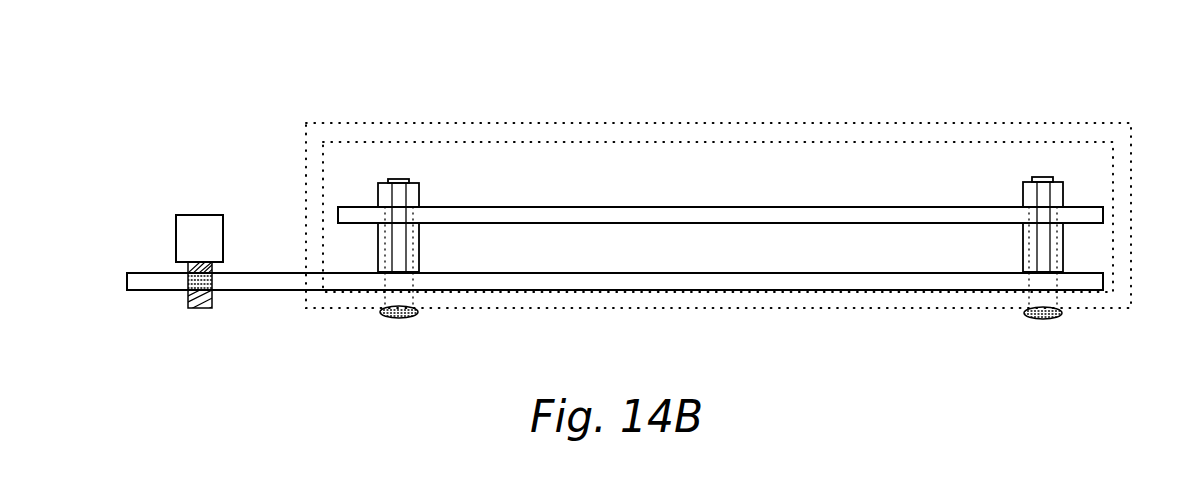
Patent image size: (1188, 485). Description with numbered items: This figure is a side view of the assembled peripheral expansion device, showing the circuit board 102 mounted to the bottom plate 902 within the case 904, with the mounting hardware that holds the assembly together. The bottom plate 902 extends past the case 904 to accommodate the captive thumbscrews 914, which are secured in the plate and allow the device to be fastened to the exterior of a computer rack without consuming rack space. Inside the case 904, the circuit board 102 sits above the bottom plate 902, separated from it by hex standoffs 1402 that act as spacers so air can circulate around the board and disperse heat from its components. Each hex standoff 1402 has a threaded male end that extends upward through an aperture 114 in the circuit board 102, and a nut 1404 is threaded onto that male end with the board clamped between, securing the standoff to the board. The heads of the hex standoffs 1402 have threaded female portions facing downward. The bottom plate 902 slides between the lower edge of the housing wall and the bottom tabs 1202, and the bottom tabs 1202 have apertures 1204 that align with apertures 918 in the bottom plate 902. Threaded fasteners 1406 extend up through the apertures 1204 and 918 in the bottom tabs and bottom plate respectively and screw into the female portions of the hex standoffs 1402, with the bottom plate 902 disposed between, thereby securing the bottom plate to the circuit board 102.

The case 904 is at (775, 135).
The bottom tabs 1202 is at (620, 303).
The circuit board 102 is at (635, 220).
The bottom plate 902 is at (635, 275).
The captive thumbscrews 914 is at (198, 226).
The apertures 114 is at (396, 214).
The nuts 1404 is at (417, 190).
The hex standoffs 1402 is at (417, 262).
The apertures 918 is at (395, 273).
The apertures 1204 is at (390, 306).
The threaded fasteners 1406 is at (410, 319).